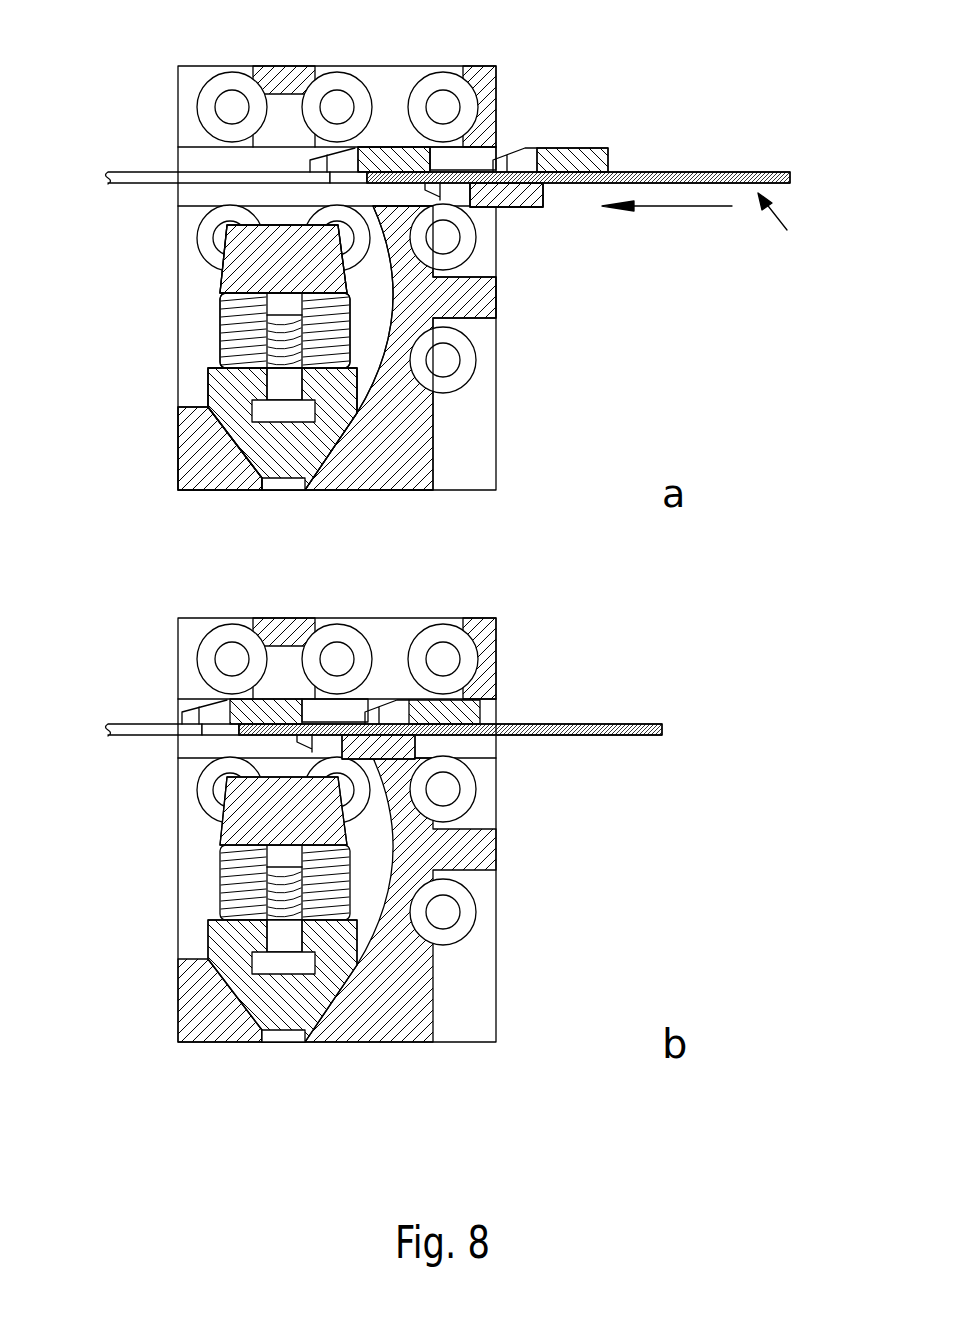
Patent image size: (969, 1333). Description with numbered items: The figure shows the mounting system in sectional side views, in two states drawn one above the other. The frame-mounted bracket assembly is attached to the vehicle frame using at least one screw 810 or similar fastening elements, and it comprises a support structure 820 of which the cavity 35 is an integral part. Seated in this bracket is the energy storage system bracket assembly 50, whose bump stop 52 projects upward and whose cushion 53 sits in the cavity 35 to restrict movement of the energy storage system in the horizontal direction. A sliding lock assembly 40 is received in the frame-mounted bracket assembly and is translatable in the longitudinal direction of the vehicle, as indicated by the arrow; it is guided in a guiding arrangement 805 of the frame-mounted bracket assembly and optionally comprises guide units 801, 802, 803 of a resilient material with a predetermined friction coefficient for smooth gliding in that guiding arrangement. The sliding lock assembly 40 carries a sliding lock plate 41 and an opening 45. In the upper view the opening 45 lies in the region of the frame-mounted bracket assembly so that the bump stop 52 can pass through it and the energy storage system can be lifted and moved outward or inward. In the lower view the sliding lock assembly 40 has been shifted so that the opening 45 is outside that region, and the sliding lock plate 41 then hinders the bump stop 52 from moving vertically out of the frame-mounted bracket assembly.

The screw 810 is at (440, 103).
The opening 45 is at (205, 180).
The sliding lock plate 41 is at (682, 168).
The guide unit 801 is at (415, 155).
The guide unit 802 is at (572, 148).
The guide unit 803 is at (517, 207).
The sliding lock assembly 40 is at (721, 243).
The bump stop 52 is at (253, 258).
The energy storage system bracket assembly 50 is at (193, 311).
The cushion 53 is at (265, 442).
The cavity 35 is at (338, 440).
The support structure 820 is at (432, 302).
The guiding arrangement 805 is at (497, 700).